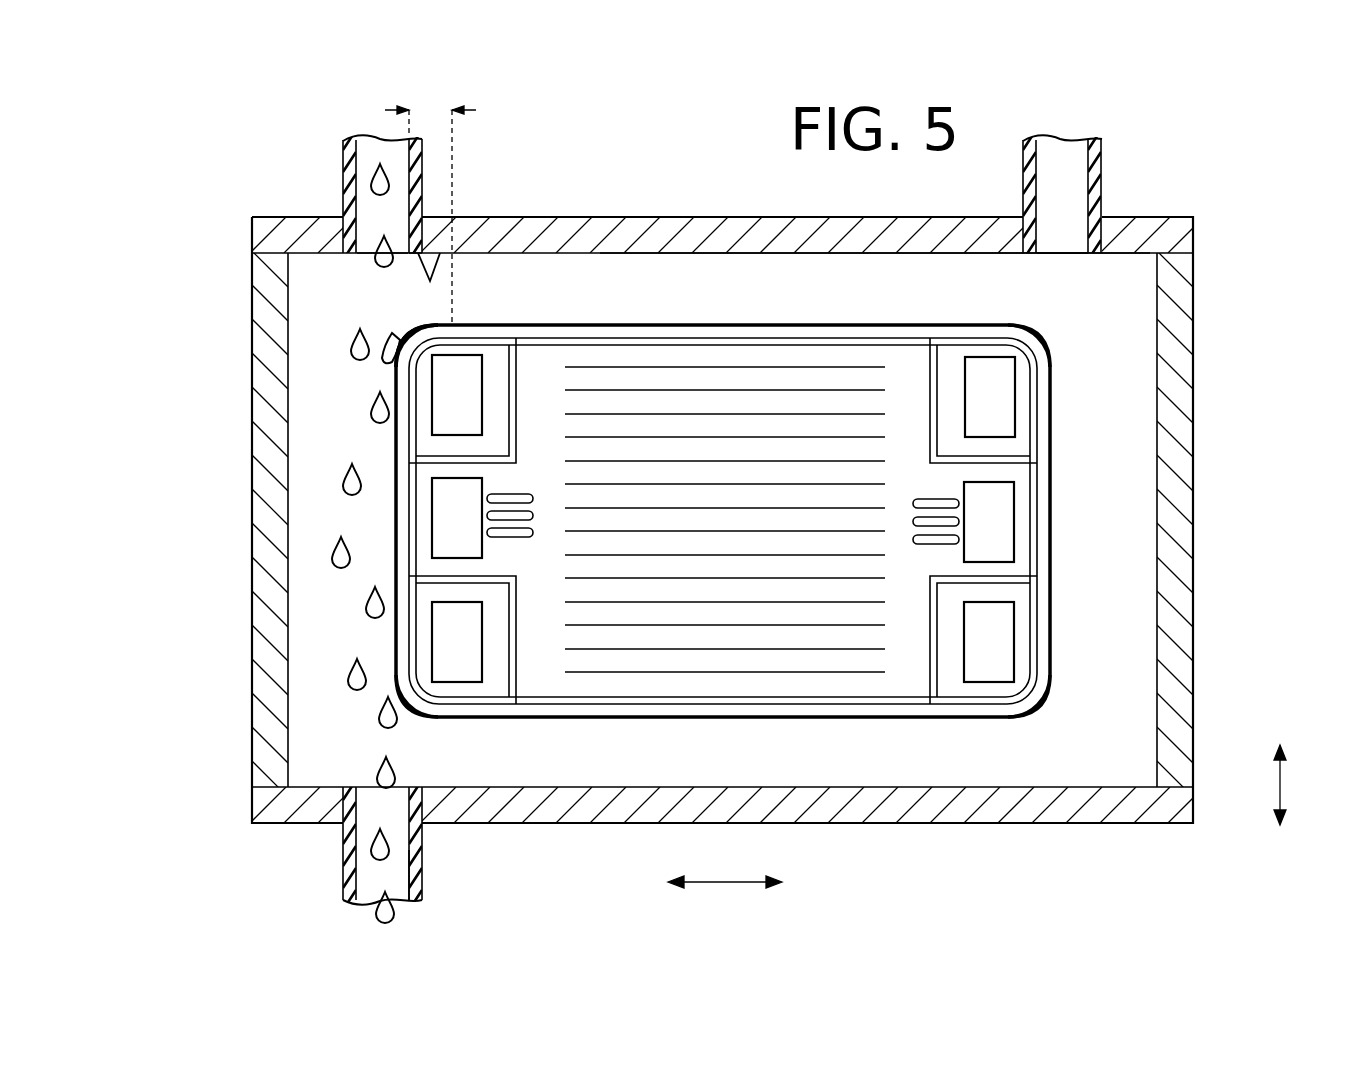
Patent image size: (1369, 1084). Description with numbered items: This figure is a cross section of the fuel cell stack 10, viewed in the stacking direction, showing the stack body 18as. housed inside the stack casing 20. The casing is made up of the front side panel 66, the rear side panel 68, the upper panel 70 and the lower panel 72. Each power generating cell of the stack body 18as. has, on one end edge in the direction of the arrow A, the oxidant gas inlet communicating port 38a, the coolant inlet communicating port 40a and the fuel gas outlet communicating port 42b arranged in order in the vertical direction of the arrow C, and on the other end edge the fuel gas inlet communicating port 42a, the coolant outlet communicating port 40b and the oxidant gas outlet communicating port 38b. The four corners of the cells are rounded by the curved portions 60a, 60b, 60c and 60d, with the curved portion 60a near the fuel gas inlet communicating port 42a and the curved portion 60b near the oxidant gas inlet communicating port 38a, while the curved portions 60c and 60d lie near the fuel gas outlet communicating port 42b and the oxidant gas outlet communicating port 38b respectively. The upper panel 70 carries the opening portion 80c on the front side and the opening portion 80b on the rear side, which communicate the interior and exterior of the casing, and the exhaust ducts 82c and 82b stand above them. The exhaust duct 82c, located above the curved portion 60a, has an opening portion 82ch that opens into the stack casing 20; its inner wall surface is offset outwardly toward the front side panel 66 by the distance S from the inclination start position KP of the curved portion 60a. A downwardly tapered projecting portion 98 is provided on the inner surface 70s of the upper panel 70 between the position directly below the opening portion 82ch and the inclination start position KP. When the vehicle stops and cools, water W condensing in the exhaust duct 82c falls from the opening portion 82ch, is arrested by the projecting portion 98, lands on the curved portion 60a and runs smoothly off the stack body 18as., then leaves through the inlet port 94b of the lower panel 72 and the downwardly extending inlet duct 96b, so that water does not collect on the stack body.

The fuel cell stack 10 is at (1302, 162).
The stack casing 20 is at (232, 213).
The stack body 18as is at (1056, 470).
The upper panel 70 is at (709, 217).
The inner surface of the upper panel 70s is at (634, 264).
The lower panel 72 is at (946, 814).
The front side panel 66 is at (262, 707).
The rear side panel 68 is at (1186, 695).
The exhaust duct 82c is at (343, 150).
The opening portion of the exhaust duct 82ch is at (362, 255).
The opening portion 80c is at (412, 250).
The opening portion 80b is at (1088, 232).
The exhaust duct 82b is at (1102, 160).
The inlet port 94b is at (366, 787).
The inlet duct 96b is at (420, 858).
The projecting portion 98 is at (436, 262).
The distance S is at (430, 204).
The inclination start position KP is at (442, 323).
The curved portion 60a is at (400, 338).
The curved portion 60b is at (1035, 336).
The curved portion 60c is at (1040, 700).
The curved portion 60d is at (412, 712).
The fuel gas inlet communicating port 42a is at (445, 400).
The fuel gas outlet communicating port 42b is at (1003, 648).
The oxidant gas inlet communicating port 38a is at (1003, 400).
The oxidant gas outlet communicating port 38b is at (447, 646).
The coolant inlet communicating port 40a is at (1003, 512).
The coolant outlet communicating port 40b is at (447, 512).
The water W is at (372, 186).
The arrow C is at (1288, 785).
The arrow A is at (725, 876).